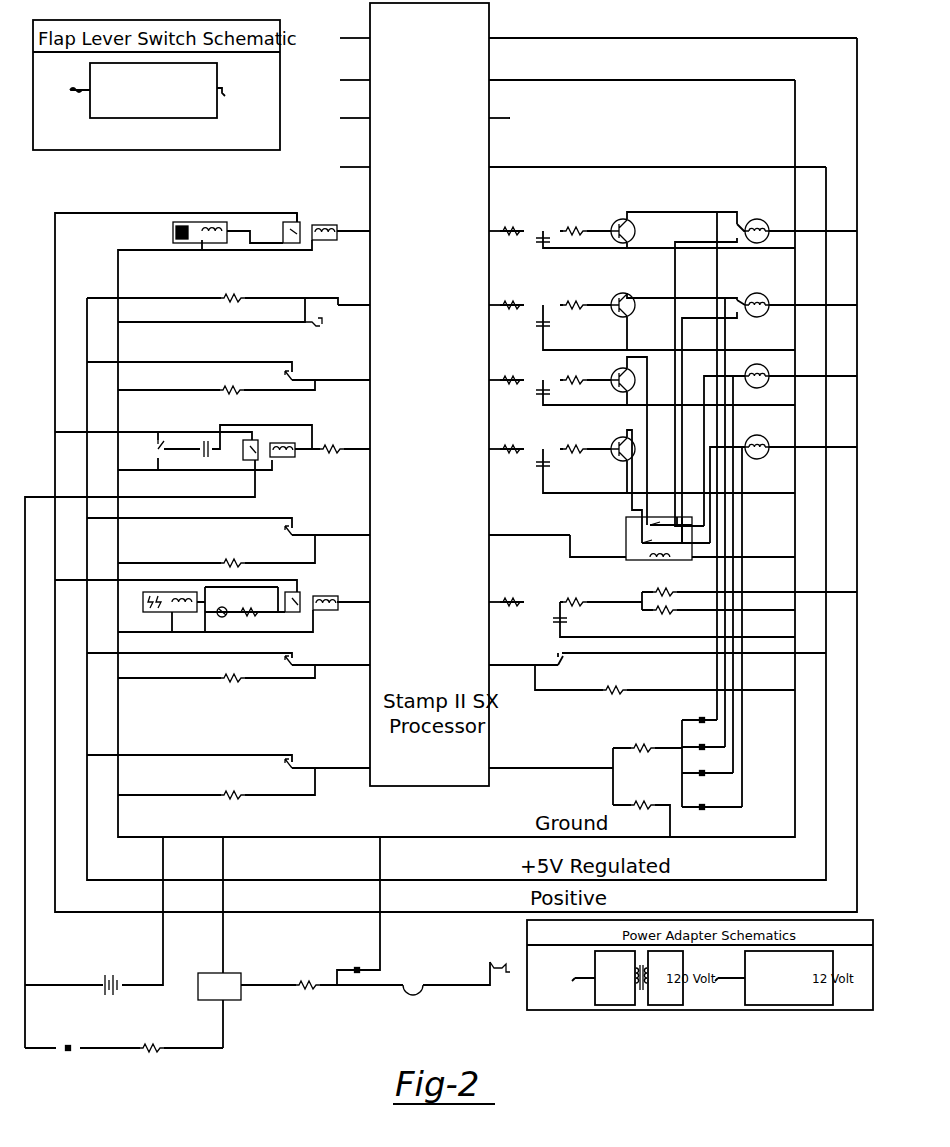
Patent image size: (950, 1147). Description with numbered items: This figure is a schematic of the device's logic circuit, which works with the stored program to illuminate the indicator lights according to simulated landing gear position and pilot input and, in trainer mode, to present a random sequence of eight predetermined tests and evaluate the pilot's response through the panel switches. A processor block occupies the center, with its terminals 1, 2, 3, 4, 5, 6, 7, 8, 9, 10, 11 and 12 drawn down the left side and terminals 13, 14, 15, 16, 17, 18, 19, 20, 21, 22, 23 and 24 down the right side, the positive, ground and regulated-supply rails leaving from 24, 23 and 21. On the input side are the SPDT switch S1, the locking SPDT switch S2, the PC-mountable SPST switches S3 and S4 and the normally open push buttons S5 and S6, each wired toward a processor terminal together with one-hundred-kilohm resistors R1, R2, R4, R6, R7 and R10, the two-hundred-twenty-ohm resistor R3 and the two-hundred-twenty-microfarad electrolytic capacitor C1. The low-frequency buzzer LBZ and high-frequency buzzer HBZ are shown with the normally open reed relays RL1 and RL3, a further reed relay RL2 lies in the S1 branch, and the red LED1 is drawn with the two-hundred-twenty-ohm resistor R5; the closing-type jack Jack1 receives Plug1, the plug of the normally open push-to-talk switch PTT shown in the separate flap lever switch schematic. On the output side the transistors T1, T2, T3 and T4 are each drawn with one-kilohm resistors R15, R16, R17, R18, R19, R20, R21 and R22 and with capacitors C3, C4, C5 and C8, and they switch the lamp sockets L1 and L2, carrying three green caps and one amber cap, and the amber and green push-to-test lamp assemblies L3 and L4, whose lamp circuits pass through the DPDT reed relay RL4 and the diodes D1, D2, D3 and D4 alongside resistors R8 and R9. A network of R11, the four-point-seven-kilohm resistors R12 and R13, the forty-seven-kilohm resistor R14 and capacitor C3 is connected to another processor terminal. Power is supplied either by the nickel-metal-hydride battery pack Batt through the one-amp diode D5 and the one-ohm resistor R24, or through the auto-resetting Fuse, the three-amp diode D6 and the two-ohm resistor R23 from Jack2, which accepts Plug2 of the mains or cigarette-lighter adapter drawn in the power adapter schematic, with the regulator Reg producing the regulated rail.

The processor pin 1 (NC) 1 is at (349, 36).
The processor pin 2 (NC) 2 is at (349, 78).
The processor pin 3 (NC) 3 is at (349, 116).
The processor pin 4 (NC) 4 is at (349, 165).
The processor pin 5 is at (363, 231).
The processor pin 6 is at (364, 305).
The processor pin 7 is at (341, 380).
The processor pin 8 is at (367, 449).
The processor pin 9 is at (341, 535).
The processor pin 10 is at (371, 602).
The processor pin 11 is at (348, 665).
The processor pin 12 is at (348, 768).
The processor pin 13 is at (534, 768).
The processor pin 14 is at (495, 665).
The processor pin 15 is at (477, 602).
The processor pin 16 is at (512, 535).
The processor pin 17 is at (477, 449).
The processor pin 18 is at (477, 380).
The processor pin 19 is at (477, 305).
The processor pin 20 is at (477, 231).
The processor pin 21 (+5V regulated) 21 is at (640, 159).
The processor pin 22 (NC) 22 is at (501, 118).
The processor pin 23 (ground) 23 is at (625, 73).
The processor pin 24 (positive) 24 is at (656, 31).
The resistor R1 is at (233, 290).
The resistor R2 is at (232, 382).
The resistor R3 is at (332, 440).
The resistor R4 is at (233, 555).
The resistor R5 is at (250, 618).
The resistor R6 is at (233, 685).
The resistor R7 is at (233, 787).
The resistor R8 is at (643, 797).
The resistor R9 is at (643, 740).
The resistor R10 is at (617, 697).
The resistor R11 is at (514, 593).
The resistor R12 is at (666, 583).
The resistor R13 is at (666, 617).
The resistor R14 is at (583, 593).
The resistor R15 is at (514, 440).
The resistor R16 is at (577, 440).
The resistor R17 is at (514, 371).
The resistor R18 is at (577, 371).
The resistor R19 is at (514, 296).
The resistor R20 is at (577, 296).
The resistor R21 is at (514, 222).
The resistor R22 is at (577, 222).
The resistor R23 is at (309, 976).
The resistor R24 is at (152, 1055).
The capacitor C1 is at (200, 450).
The capacitor C3 is at (543, 536).
The capacitor C4 is at (537, 386).
The capacitor C5 is at (537, 314).
The capacitor C8 is at (537, 238).
The switch S1 is at (150, 449).
The switch S2 is at (279, 373).
The switch S3 is at (279, 535).
The switch S4 is at (279, 665).
The switch S5 is at (279, 768).
The switch S6 is at (572, 663).
The transistor T1 is at (615, 444).
The transistor T2 is at (615, 375).
The transistor T3 is at (615, 300).
The transistor T4 is at (615, 226).
The lamp socket L1 is at (767, 442).
The lamp socket L2 is at (767, 371).
The push to test lamp assembly L3 is at (767, 300).
The push to test lamp assembly L4 is at (767, 226).
The relay RL1 is at (296, 232).
The relay RL2 is at (284, 454).
The relay RL3 is at (326, 597).
The relay RL4 is at (644, 538).
The diode D1 is at (704, 798).
The diode D2 is at (704, 765).
The diode D3 is at (704, 739).
The diode D4 is at (704, 712).
The diode D5 is at (68, 1057).
The diode D6 is at (377, 971).
The LED LED1 is at (233, 602).
The buzzer LBZ is at (187, 232).
The buzzer HBZ is at (157, 602).
The jack Jack1 is at (295, 316).
The jack Jack2 is at (481, 968).
The battery pack Batt is at (95, 982).
The regulator Reg is at (219, 986).
The fuse Fuse is at (420, 979).
The plug Plug1 is at (125, 90).
The push to talk type switch PTT is at (189, 90).
The plug Plug2 is at (556, 979).